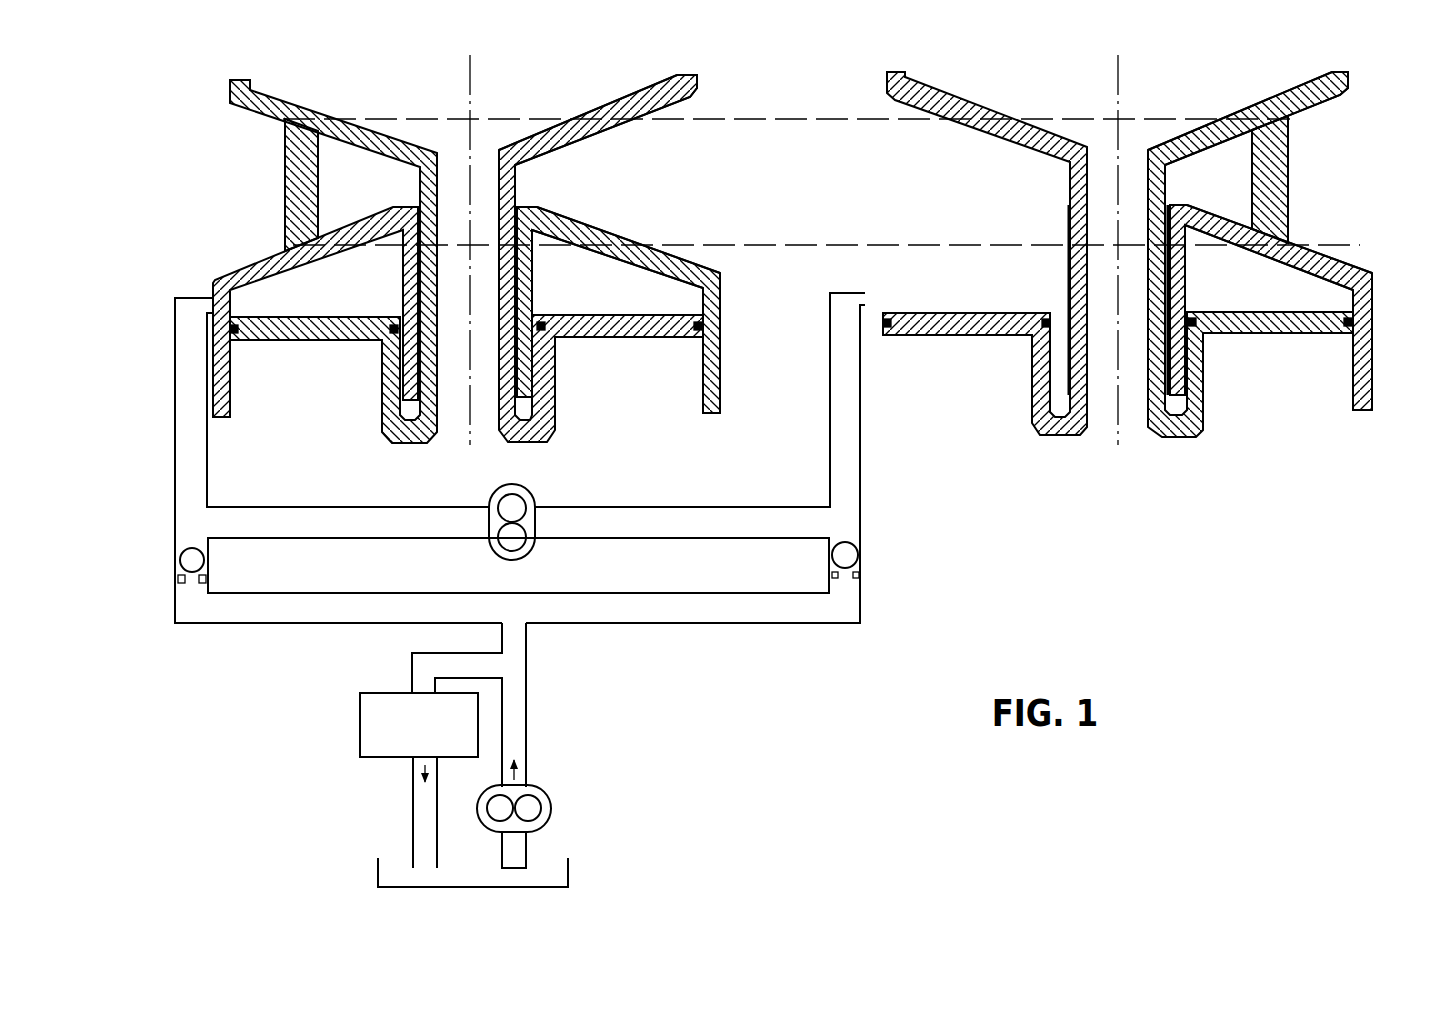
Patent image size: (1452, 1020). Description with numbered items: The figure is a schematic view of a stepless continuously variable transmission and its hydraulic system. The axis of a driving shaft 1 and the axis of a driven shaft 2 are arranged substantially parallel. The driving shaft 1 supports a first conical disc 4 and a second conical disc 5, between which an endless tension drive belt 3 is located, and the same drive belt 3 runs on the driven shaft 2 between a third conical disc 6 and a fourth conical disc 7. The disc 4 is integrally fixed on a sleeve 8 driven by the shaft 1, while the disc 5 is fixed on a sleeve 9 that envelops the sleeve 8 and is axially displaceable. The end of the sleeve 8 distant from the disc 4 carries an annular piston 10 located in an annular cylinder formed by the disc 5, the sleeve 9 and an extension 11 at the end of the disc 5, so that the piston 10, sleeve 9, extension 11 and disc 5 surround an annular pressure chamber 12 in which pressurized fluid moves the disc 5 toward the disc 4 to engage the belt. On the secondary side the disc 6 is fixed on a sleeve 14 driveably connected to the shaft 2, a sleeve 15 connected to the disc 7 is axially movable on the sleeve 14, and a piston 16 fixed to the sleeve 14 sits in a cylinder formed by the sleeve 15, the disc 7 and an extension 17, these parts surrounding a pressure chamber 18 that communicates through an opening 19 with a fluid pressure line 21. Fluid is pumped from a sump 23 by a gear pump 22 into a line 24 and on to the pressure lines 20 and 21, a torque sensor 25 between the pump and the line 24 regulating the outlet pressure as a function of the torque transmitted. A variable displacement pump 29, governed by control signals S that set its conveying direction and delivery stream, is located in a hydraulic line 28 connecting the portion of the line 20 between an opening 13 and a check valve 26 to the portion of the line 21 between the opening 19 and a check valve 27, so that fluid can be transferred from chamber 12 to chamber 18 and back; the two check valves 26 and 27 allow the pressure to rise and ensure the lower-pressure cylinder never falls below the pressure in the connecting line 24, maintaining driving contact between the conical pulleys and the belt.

The driving shaft 1 is at (470, 73).
The driven shaft 2 is at (1118, 73).
The endless tension drive belt 3 is at (305, 190).
The first conical disc 4 is at (588, 135).
The second conical disc 5 is at (620, 242).
The third conical disc 6 is at (1307, 103).
The fourth conical disc 7 is at (1328, 258).
The sleeve 8 is at (515, 185).
The sleeve 9 is at (530, 283).
The annular piston 10 is at (617, 330).
The extension 11 is at (715, 362).
The annular pressure chamber 12 is at (627, 303).
The opening 13 is at (215, 300).
The sleeve 14 is at (1160, 183).
The sleeve 15 is at (1178, 290).
The piston 16 is at (1292, 325).
The extension 17 is at (1367, 318).
The pressure chamber 18 is at (1247, 295).
The opening 19 is at (865, 293).
The pressure line 20 is at (203, 457).
The fluid pressure line 21 is at (862, 443).
The gear pump 22 is at (558, 812).
The sump 23 is at (568, 868).
The line 24 is at (525, 667).
The torque sensor 25 is at (368, 755).
The check valve 26 is at (168, 573).
The check valve 27 is at (874, 549).
The hydraulic line 28 is at (340, 533).
The variable displacement pump 29 is at (542, 497).
The control signals S is at (506, 480).